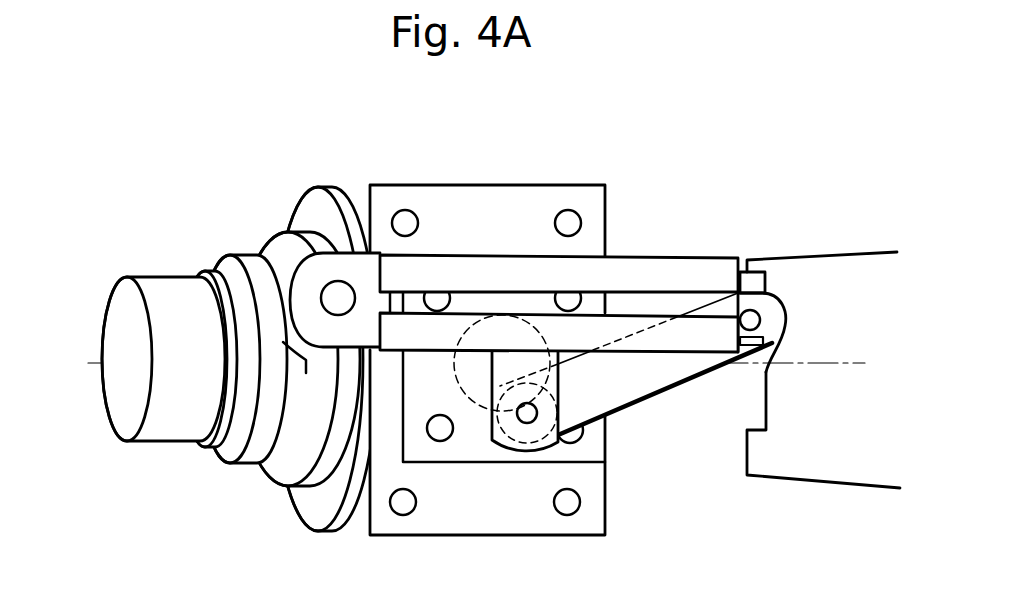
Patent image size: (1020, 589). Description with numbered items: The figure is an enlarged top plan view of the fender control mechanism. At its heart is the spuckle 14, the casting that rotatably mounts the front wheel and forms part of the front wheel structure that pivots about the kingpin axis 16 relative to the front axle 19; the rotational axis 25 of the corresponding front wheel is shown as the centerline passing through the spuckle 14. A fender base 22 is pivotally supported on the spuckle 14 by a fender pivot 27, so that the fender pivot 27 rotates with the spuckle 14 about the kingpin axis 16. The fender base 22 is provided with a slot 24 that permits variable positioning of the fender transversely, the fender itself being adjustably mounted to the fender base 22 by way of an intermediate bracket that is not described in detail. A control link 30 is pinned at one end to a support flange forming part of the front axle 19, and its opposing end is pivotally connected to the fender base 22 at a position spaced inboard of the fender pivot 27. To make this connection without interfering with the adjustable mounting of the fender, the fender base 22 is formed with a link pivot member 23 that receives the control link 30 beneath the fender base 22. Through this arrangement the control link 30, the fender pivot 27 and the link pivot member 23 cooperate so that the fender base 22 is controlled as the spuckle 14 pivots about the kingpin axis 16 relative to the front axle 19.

The spuckle 14 is at (293, 518).
The kingpin axis 16 is at (607, 417).
The front axle 19 is at (821, 273).
The fender base 22 is at (628, 268).
The link pivot member 23 is at (545, 447).
The slot 24 is at (658, 292).
The rotational axis 25 is at (118, 364).
The fender pivot 27 is at (339, 296).
The control link 30 is at (672, 383).